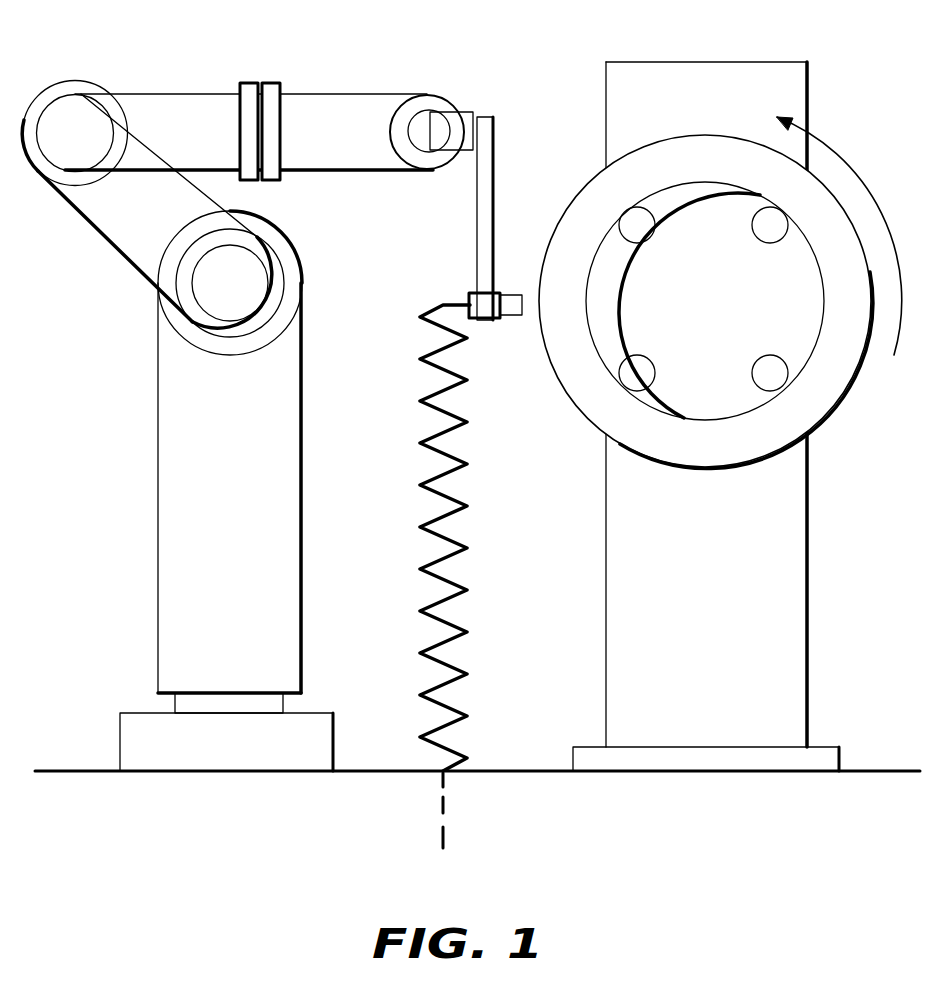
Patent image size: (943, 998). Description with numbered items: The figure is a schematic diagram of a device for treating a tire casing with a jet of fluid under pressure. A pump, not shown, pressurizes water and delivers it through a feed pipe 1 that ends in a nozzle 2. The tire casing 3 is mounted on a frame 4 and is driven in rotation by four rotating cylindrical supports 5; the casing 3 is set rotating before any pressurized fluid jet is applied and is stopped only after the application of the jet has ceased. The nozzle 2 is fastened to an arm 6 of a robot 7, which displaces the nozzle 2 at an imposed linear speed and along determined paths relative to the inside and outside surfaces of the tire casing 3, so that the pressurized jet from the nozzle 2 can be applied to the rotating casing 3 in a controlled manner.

The feed pipe 1 is at (423, 403).
The nozzle 2 is at (510, 320).
The tire casing 3 is at (840, 397).
The frame 4 is at (738, 62).
The rotating cylindrical supports 5 is at (585, 203).
The arm 6 is at (477, 232).
The robot 7 is at (168, 487).